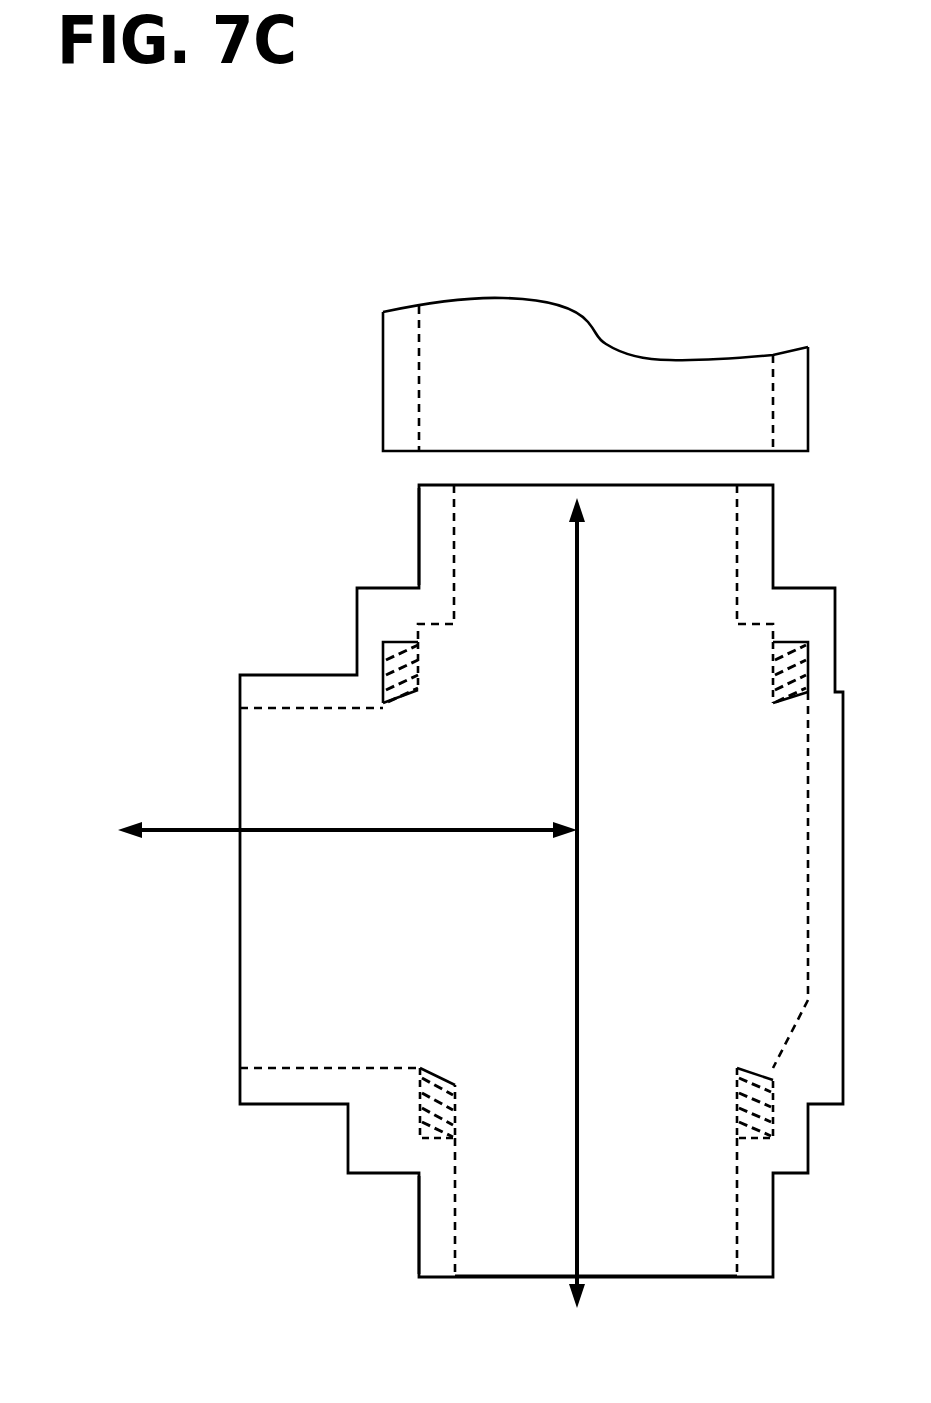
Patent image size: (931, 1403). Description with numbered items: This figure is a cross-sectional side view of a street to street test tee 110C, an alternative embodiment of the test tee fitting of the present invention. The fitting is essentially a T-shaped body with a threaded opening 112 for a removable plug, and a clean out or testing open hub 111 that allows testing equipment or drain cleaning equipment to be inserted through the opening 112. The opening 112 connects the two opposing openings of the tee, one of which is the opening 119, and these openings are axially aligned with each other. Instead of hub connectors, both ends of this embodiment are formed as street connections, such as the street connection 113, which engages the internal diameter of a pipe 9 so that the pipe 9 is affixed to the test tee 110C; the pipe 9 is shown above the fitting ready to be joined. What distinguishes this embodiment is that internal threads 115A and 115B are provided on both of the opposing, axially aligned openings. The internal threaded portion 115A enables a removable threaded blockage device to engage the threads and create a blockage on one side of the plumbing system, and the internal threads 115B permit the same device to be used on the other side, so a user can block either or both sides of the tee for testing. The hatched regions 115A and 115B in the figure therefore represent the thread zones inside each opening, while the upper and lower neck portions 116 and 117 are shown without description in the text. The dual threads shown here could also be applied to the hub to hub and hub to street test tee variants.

The pipe 9 is at (383, 381).
The street to street test tee 110C is at (160, 519).
The clean out or testing open hub 111 is at (313, 673).
The threaded opening 112 is at (278, 898).
The street connection 113 is at (419, 555).
The internal threaded portion 115A is at (792, 700).
The internal threads 115B is at (757, 1072).
The upper bore 116 is at (507, 512).
The lower neck 117 is at (419, 1243).
The opening 119 is at (490, 1242).